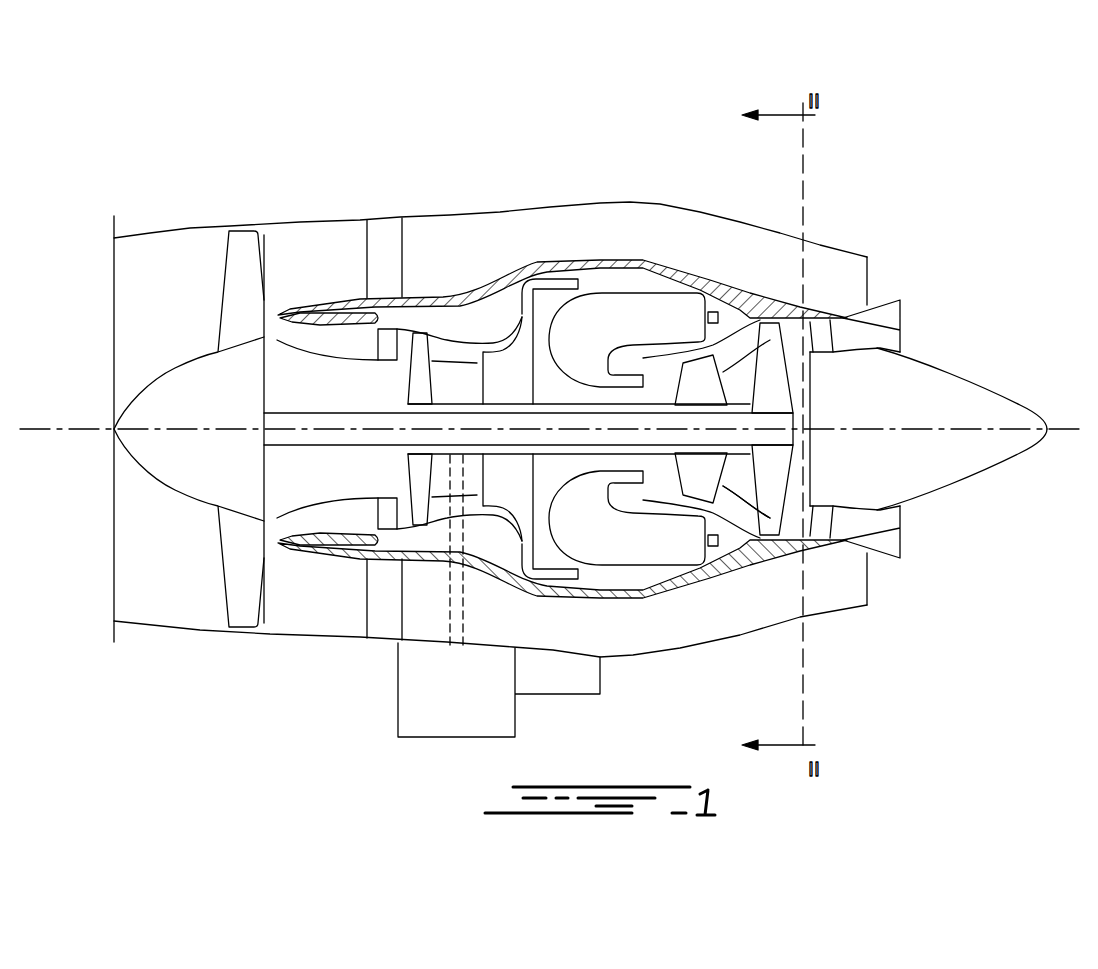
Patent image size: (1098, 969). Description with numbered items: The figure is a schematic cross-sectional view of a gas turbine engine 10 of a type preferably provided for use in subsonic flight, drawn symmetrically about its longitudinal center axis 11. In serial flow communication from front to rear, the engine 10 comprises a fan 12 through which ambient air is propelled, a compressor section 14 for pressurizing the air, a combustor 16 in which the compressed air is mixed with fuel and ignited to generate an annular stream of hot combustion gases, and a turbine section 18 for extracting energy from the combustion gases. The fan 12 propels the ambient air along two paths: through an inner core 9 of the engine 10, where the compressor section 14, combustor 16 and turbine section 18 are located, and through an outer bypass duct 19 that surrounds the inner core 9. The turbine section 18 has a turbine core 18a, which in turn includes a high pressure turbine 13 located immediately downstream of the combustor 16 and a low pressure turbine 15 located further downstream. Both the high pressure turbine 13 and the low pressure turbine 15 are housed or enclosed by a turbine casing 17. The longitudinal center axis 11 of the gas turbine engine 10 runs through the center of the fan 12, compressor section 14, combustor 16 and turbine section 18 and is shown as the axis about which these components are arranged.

The inner core 9 is at (357, 354).
The gas turbine engine 10 is at (216, 139).
The longitudinal center axis 11 is at (1077, 430).
The fan 12 is at (238, 558).
The high pressure turbine 13 is at (702, 380).
The compressor section 14 is at (447, 343).
The low pressure turbine 15 is at (775, 367).
The combustor 16 is at (630, 311).
The turbine casing 17 is at (822, 325).
The turbine section 18 is at (738, 490).
The turbine core 18a is at (712, 462).
The outer bypass duct 19 is at (548, 249).